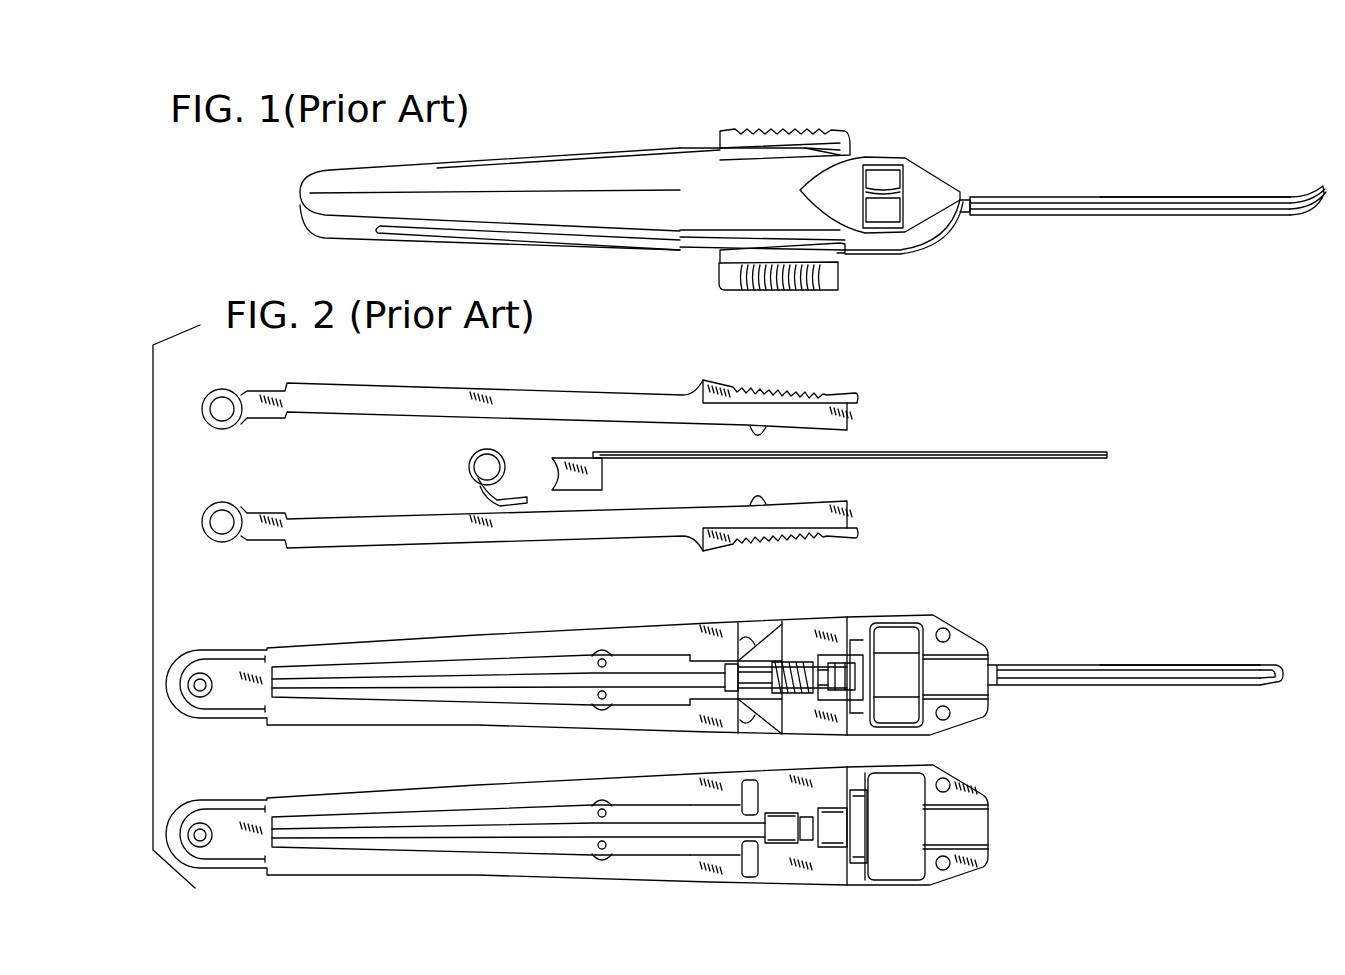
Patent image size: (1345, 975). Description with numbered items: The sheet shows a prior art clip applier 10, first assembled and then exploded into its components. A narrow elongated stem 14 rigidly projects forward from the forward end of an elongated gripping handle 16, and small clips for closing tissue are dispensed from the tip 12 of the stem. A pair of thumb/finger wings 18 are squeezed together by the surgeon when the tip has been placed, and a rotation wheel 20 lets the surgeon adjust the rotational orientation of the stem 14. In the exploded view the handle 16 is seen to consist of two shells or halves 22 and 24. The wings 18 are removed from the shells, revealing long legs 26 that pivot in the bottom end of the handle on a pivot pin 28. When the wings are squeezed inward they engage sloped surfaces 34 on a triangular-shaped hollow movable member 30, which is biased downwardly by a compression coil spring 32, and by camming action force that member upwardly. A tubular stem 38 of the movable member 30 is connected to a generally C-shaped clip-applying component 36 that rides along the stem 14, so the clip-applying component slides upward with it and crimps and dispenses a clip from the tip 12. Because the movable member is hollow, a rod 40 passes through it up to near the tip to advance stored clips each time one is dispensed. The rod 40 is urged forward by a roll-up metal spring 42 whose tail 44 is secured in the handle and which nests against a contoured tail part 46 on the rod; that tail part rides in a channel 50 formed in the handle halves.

In FIG. 1, the clip applier 10 is at (560, 135).
In FIG. 1, the tip 12 is at (1312, 190).
In FIG. 2, the tip 12 is at (1270, 665).
In FIG. 1, the stem 14 is at (1208, 195).
In FIG. 2, the stem 14 is at (1160, 665).
In FIG. 1, the handle 16 is at (905, 270).
In FIG. 2, the handle 16 is at (968, 595).
In FIG. 1, the thumb/finger wings 18 is at (745, 130).
In FIG. 2, the thumb/finger wings 18 is at (790, 390).
In FIG. 1, the rotation wheel 20 is at (887, 172).
In FIG. 2, the rotation wheel 20 is at (897, 640).
In FIG. 1, the shell or half 22 is at (370, 175).
In FIG. 2, the shell or half 22 is at (963, 850).
In FIG. 2, the shell or half 24 is at (965, 630).
In FIG. 2, the long legs 26 is at (432, 392).
In FIG. 2, the pivot pin 28 is at (200, 676).
In FIG. 2, the movable member 30 is at (768, 625).
In FIG. 2, the compression coil spring 32 is at (800, 660).
In FIG. 2, the sloped surfaces 34 is at (737, 635).
In FIG. 1, the clip-applying component 36 is at (1035, 195).
In FIG. 2, the clip-applying component 36 is at (1107, 663).
In FIG. 2, the tubular stem 38 is at (787, 690).
In FIG. 2, the rod 40 is at (955, 453).
In FIG. 2, the roll-up metal spring 42 is at (480, 455).
In FIG. 2, the tail 44 is at (497, 505).
In FIG. 2, the contoured tail part 46 is at (567, 463).
In FIG. 2, the channel 50 is at (550, 677).